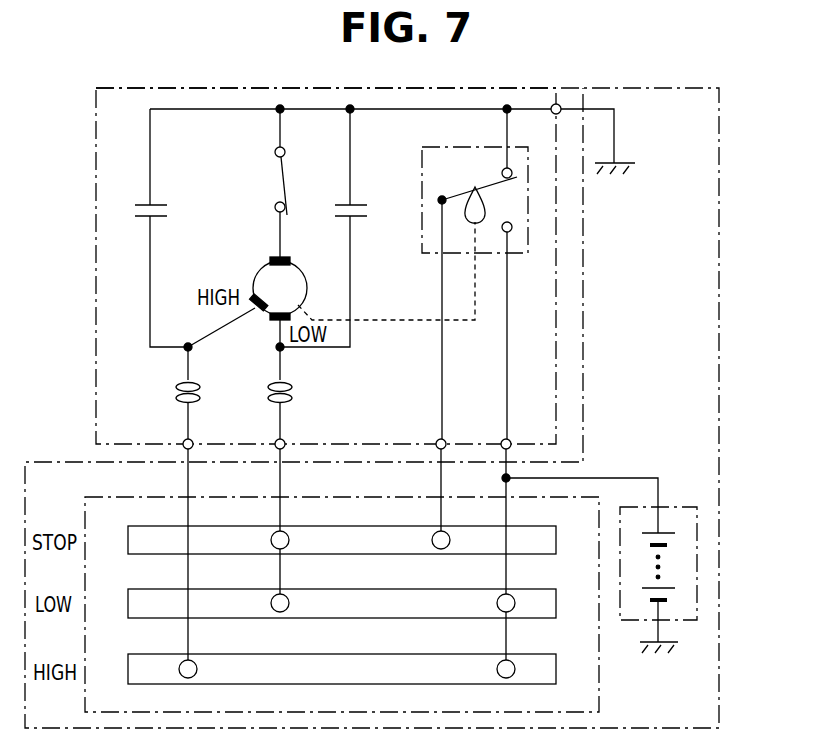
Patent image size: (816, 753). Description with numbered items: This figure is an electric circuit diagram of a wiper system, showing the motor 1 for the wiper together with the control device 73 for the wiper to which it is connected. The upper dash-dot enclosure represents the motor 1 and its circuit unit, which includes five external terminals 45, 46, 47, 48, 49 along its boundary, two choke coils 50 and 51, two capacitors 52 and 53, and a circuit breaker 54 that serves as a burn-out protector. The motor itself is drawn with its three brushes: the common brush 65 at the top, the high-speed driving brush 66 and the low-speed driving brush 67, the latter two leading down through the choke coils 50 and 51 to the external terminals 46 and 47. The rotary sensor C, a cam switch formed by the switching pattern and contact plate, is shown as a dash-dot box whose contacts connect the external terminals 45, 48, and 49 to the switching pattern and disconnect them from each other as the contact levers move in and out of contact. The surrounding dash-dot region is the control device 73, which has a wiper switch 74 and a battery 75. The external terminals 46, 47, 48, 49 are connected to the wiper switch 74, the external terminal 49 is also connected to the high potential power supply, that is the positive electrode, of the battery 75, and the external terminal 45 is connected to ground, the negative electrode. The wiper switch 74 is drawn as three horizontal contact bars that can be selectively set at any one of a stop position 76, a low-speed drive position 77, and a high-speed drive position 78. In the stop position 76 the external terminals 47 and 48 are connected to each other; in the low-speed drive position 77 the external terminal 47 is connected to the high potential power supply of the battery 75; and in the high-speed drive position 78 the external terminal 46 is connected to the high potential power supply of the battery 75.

The motor for the wiper 1 is at (95, 170).
The external terminal 45 is at (556, 115).
The external terminal 46 is at (192, 440).
The external terminal 47 is at (284, 440).
The external terminal 48 is at (443, 438).
The external terminal 49 is at (508, 438).
The choke coil 50 is at (200, 390).
The choke coil 51 is at (292, 390).
The capacitor 52 is at (160, 205).
The capacitor 53 is at (352, 205).
The circuit breaker 54 is at (288, 178).
The common brush 65 is at (290, 256).
The high-speed driving brush 66 is at (258, 318).
The low-speed driving brush 67 is at (278, 322).
The control device 73 is at (719, 128).
The wiper switch 74 is at (599, 682).
The battery 75 is at (682, 506).
The stop position 76 is at (128, 529).
The low-speed drive position 77 is at (128, 592).
The high-speed drive position 78 is at (128, 657).
The rotary sensor C is at (424, 193).